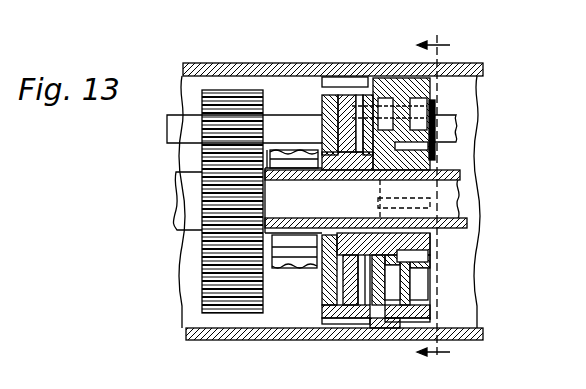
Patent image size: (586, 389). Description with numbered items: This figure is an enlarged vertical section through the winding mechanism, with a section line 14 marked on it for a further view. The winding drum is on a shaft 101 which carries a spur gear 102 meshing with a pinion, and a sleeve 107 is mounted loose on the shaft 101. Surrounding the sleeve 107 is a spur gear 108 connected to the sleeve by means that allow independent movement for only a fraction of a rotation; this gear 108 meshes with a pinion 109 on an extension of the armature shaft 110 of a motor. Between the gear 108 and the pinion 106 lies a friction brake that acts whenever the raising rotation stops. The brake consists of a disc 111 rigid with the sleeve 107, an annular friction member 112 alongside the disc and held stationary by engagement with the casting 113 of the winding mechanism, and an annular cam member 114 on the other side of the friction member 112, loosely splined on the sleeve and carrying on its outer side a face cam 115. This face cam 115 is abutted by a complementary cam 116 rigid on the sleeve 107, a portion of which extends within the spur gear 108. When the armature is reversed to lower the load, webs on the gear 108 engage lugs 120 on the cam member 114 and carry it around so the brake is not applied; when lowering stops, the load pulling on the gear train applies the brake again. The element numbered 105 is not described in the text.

The section line 14— 14 is at (433, 197).
The shaft 101 is at (190, 205).
The spur gear 102 is at (205, 285).
The rotor hub plate 105 is at (275, 268).
The pinion 106 is at (296, 152).
The sleeve 107 is at (468, 224).
The spur gear 108 is at (432, 309).
The pinion 109 is at (435, 107).
The armature shaft 110 is at (178, 129).
The disc 111 is at (326, 296).
The annular friction member 112 is at (328, 310).
The casting 113 is at (228, 333).
The annular cam member 114 is at (322, 280).
The face cam 115 is at (375, 196).
The complementary cam 116 is at (433, 243).
The lugs 120 is at (392, 288).